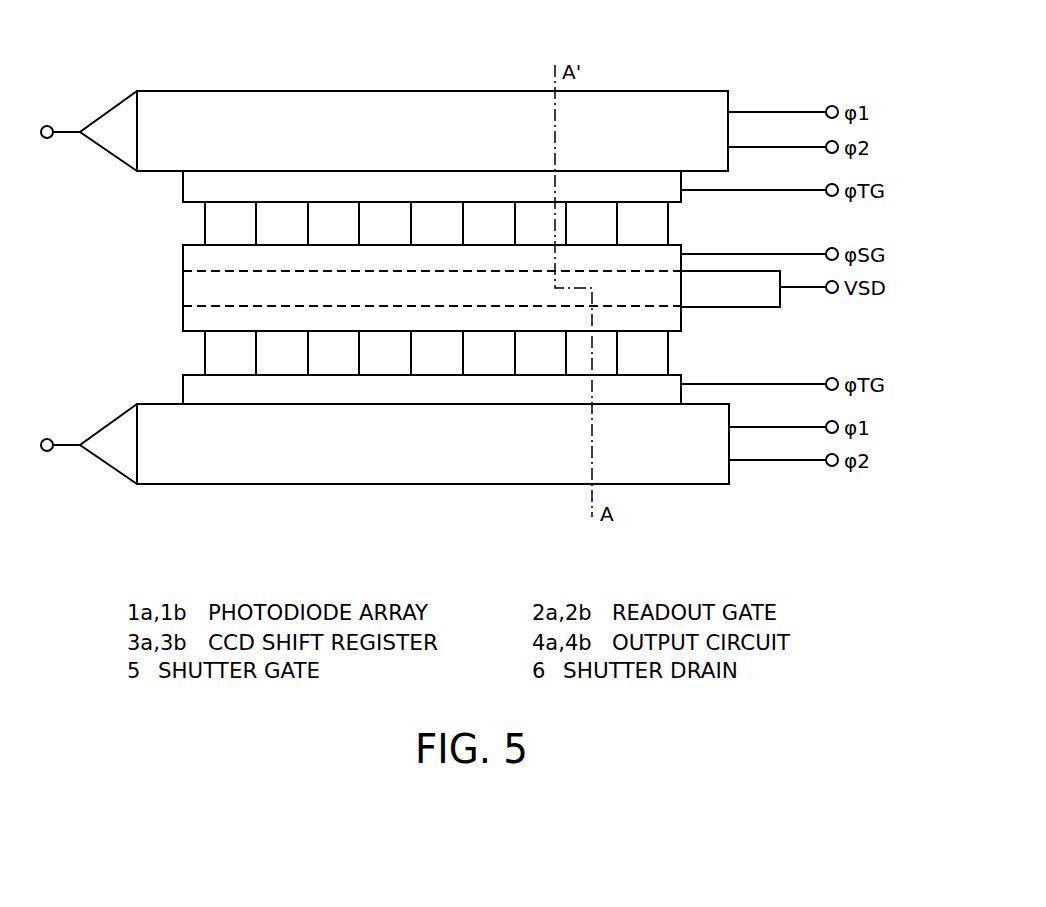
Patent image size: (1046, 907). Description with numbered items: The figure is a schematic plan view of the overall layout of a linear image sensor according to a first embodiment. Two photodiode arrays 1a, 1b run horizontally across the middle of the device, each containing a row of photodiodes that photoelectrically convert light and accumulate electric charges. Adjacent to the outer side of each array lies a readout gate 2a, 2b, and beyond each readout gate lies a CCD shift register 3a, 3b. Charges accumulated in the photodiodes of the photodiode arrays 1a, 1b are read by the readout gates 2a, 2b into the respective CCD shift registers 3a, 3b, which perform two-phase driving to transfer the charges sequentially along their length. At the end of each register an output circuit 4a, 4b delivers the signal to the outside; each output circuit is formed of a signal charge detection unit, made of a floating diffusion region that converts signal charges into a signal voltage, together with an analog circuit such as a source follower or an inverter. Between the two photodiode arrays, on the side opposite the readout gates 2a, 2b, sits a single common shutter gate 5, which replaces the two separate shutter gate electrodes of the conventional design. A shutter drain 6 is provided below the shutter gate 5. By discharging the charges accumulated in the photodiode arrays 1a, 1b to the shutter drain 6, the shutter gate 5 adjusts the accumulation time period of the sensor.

The photodiode array 1a is at (211, 225).
The photodiode array 1b is at (213, 357).
The readout gate 2a is at (188, 188).
The readout gate 2b is at (193, 390).
The CCD shift register 3a is at (352, 101).
The CCD shift register 3b is at (356, 478).
The output circuit 4a is at (108, 118).
The output circuit 4b is at (109, 458).
The shutter gate 5 is at (192, 258).
The shutter drain 6 is at (192, 291).